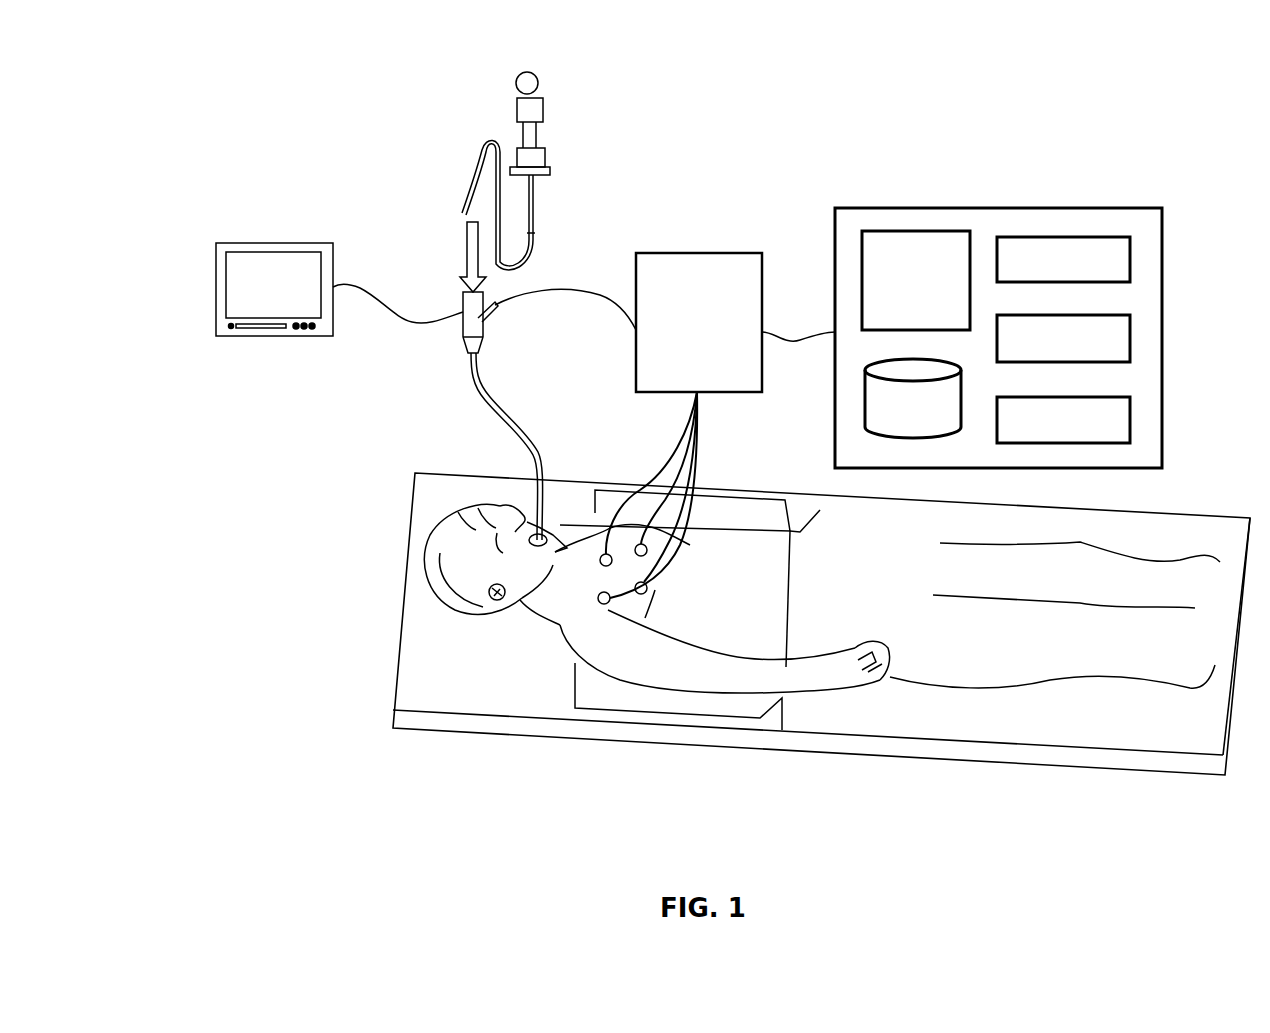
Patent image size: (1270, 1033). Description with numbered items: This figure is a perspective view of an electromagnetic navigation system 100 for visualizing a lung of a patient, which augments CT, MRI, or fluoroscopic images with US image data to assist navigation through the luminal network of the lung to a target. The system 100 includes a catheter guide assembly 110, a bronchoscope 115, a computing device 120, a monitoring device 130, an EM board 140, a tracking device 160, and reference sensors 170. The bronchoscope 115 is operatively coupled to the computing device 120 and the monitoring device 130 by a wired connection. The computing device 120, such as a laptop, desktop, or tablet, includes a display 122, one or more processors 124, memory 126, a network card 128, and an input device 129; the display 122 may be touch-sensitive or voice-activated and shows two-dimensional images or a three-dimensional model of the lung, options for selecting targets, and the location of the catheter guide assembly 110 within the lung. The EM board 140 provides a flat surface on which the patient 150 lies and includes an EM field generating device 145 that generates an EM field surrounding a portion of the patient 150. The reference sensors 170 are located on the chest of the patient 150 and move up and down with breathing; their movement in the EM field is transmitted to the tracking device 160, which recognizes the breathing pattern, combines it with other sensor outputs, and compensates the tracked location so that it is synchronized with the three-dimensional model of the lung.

The electromagnetic navigation system 100 is at (754, 100).
The catheter guide assembly 110 is at (553, 124).
The bronchoscope 115 is at (513, 412).
The computing device 120 is at (938, 190).
The display 122 is at (916, 280).
The processors 124 is at (1063, 259).
The memory 126 is at (913, 398).
The network card 128 is at (1063, 338).
The input device 129 is at (1063, 420).
The monitoring device 130 is at (287, 243).
The EM board 140 is at (434, 673).
The EM field generating device 145 is at (612, 683).
The patient 150 is at (455, 527).
The tracking device 160 is at (665, 322).
The reference sensors 170 is at (672, 590).